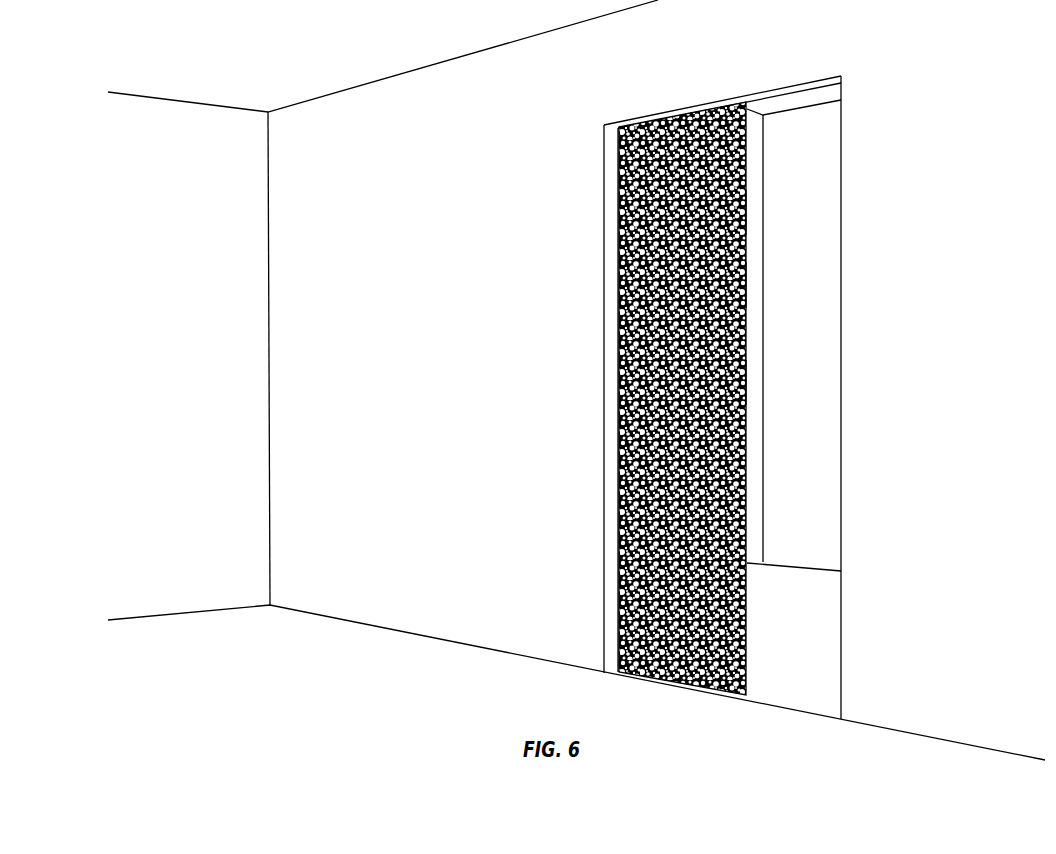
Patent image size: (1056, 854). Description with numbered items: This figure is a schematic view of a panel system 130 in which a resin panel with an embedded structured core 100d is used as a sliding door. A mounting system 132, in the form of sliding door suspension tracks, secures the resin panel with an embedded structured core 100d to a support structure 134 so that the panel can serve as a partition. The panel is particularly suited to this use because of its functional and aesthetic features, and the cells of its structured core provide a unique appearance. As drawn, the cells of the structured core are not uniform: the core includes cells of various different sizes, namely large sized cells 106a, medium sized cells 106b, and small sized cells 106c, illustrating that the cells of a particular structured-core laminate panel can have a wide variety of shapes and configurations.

The panel system 130 is at (569, 184).
The mounting system 132 is at (798, 92).
The support structure 134 is at (710, 94).
The resin panel with an embedded structured core 100d is at (620, 462).
The large sized cells 106a is at (747, 212).
The medium sized cells 106b is at (747, 285).
The small sized cells 106c is at (747, 382).